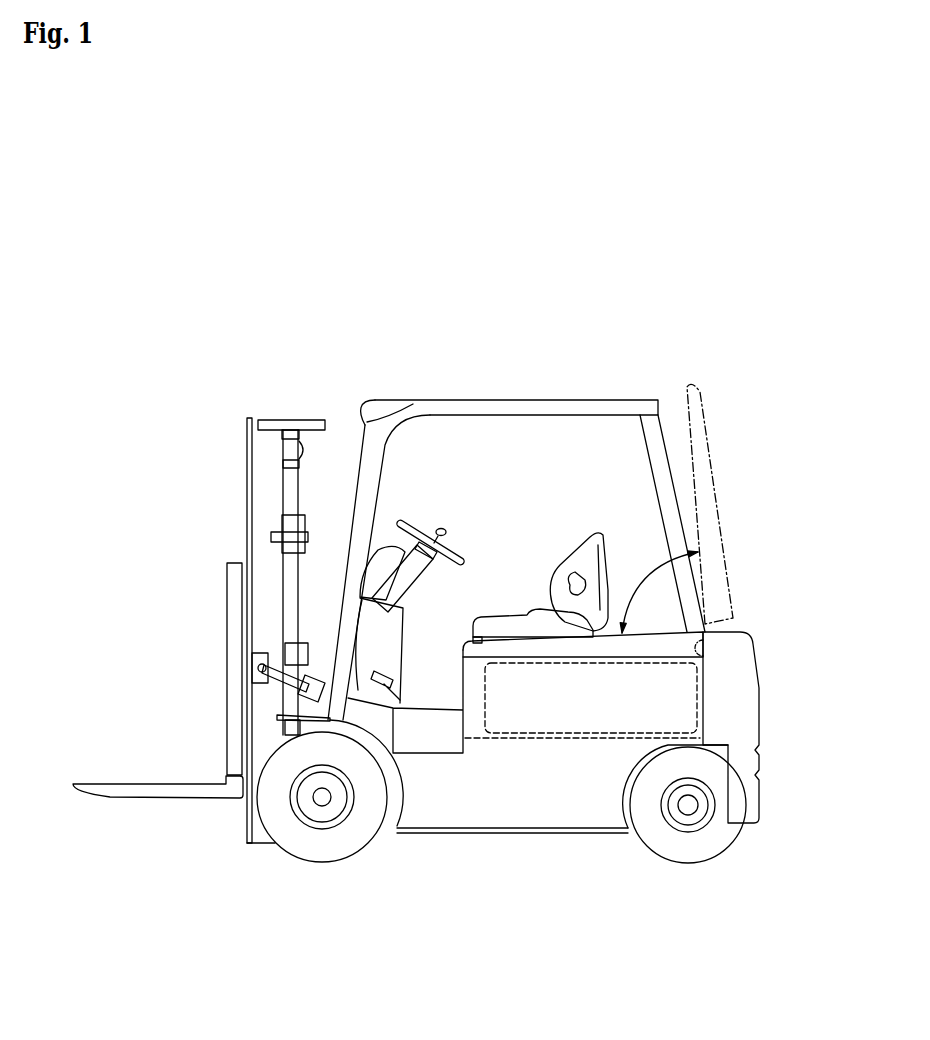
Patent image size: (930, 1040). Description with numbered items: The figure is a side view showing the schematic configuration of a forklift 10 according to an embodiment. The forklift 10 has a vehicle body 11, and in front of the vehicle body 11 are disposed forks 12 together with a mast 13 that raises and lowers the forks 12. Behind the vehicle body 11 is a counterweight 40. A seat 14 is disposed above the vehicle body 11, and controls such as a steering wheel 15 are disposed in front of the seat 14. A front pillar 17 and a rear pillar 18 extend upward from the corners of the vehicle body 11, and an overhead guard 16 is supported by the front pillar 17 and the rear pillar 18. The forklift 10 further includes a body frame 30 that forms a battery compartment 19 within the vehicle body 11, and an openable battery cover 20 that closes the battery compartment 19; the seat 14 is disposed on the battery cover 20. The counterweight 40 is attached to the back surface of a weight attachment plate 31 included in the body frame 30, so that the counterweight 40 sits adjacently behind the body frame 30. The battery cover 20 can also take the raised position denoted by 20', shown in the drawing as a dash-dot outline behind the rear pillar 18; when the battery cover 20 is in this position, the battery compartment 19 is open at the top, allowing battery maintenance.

The forklift 10 is at (162, 339).
The vehicle body 11 is at (502, 818).
The forks 12 is at (142, 784).
The mast 13 is at (253, 527).
The seat 14 is at (522, 618).
The steering wheel 15 is at (462, 556).
The overhead guard 16 is at (582, 399).
The front pillar 17 is at (378, 490).
The rear pillar 18 is at (657, 489).
The battery compartment 19 is at (480, 688).
The battery cover 20 is at (583, 604).
The battery cover (open position) 20' is at (726, 504).
The body frame 30 is at (575, 742).
The weight attachment plate 31 is at (746, 634).
The counterweight 40 is at (754, 707).